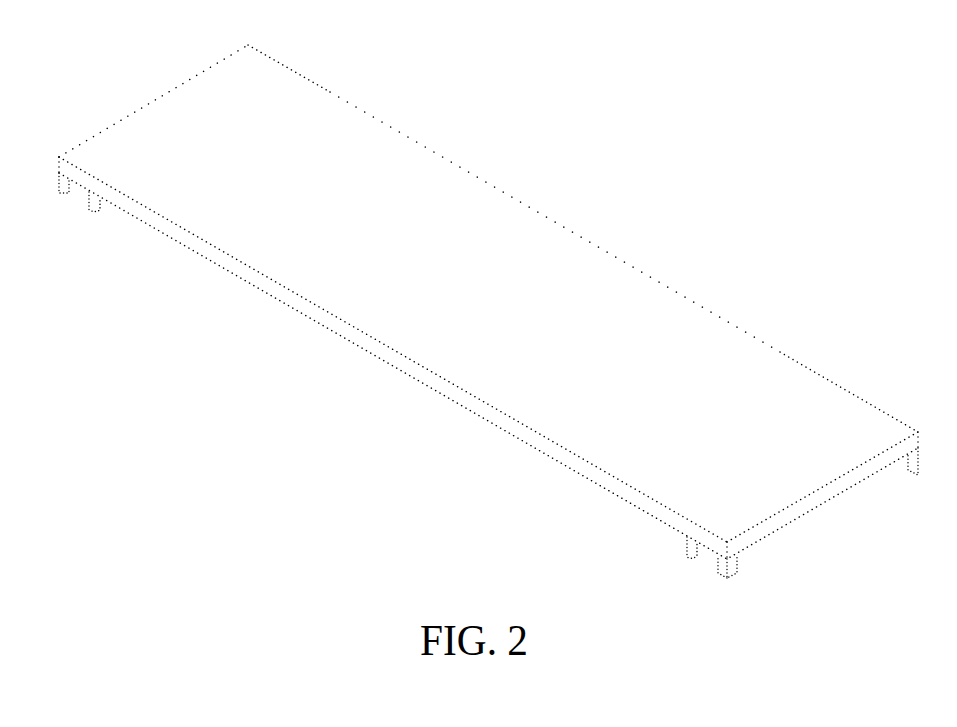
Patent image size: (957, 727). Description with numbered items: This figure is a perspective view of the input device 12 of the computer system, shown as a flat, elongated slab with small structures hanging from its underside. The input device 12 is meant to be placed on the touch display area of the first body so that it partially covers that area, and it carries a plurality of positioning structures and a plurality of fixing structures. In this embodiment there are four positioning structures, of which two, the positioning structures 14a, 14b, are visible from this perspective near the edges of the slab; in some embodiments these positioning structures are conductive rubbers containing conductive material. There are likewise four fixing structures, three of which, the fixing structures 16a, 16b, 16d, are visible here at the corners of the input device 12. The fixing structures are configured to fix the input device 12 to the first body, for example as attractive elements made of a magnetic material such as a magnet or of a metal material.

The input device 12 is at (163, 117).
The positioning structure 14a is at (103, 208).
The positioning structure 14b is at (687, 548).
The fixing structure 16a is at (70, 189).
The fixing structure 16b is at (717, 568).
The fixing structure 16d is at (912, 466).